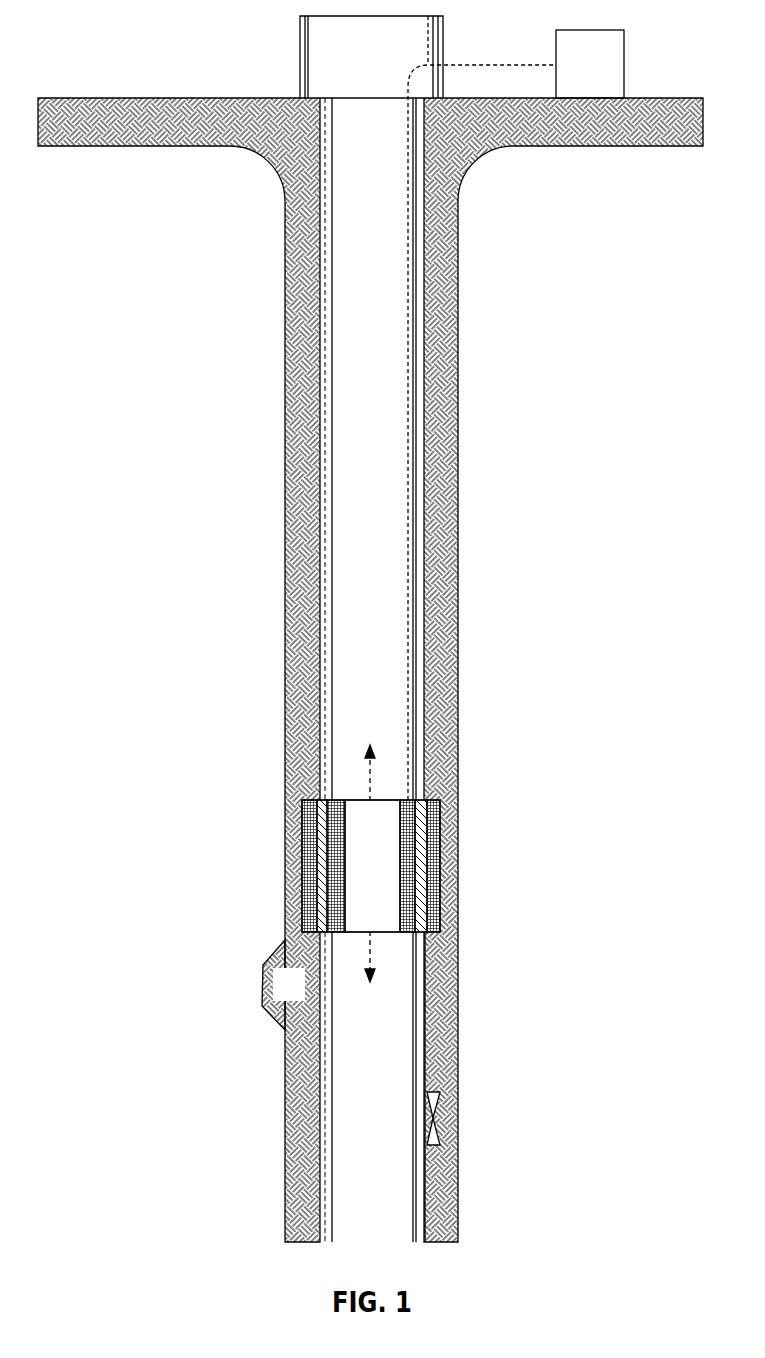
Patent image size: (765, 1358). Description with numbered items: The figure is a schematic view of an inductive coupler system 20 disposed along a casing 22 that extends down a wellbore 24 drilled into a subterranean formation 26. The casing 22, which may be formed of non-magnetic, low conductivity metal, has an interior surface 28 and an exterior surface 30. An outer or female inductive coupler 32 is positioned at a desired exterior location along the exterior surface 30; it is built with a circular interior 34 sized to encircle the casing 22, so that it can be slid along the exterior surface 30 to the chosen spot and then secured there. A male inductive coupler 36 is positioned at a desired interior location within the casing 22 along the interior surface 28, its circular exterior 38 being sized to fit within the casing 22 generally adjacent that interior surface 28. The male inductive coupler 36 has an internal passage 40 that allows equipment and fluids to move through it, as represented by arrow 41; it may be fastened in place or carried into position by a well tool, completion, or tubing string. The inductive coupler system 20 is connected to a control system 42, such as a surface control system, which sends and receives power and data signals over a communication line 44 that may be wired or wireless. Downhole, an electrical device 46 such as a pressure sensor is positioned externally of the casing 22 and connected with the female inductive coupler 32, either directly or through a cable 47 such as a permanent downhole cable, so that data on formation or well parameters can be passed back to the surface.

The inductive coupler system 20 is at (379, 864).
The casing 22 is at (430, 372).
The wellbore 24 is at (355, 328).
The subterranean formation 26 is at (303, 999).
The interior surface 28 is at (326, 492).
The exterior surface 30 is at (300, 590).
The female inductive coupler 32 is at (432, 835).
The circular interior 34 is at (440, 903).
The male inductive coupler 36 is at (335, 868).
The circular exterior 38 is at (327, 900).
The internal passage 40 is at (386, 880).
The arrow 41 is at (372, 787).
The control system 42 is at (605, 83).
The communication line 44 is at (404, 466).
The electrical device 46 is at (440, 1118).
The cable 47 is at (437, 1040).